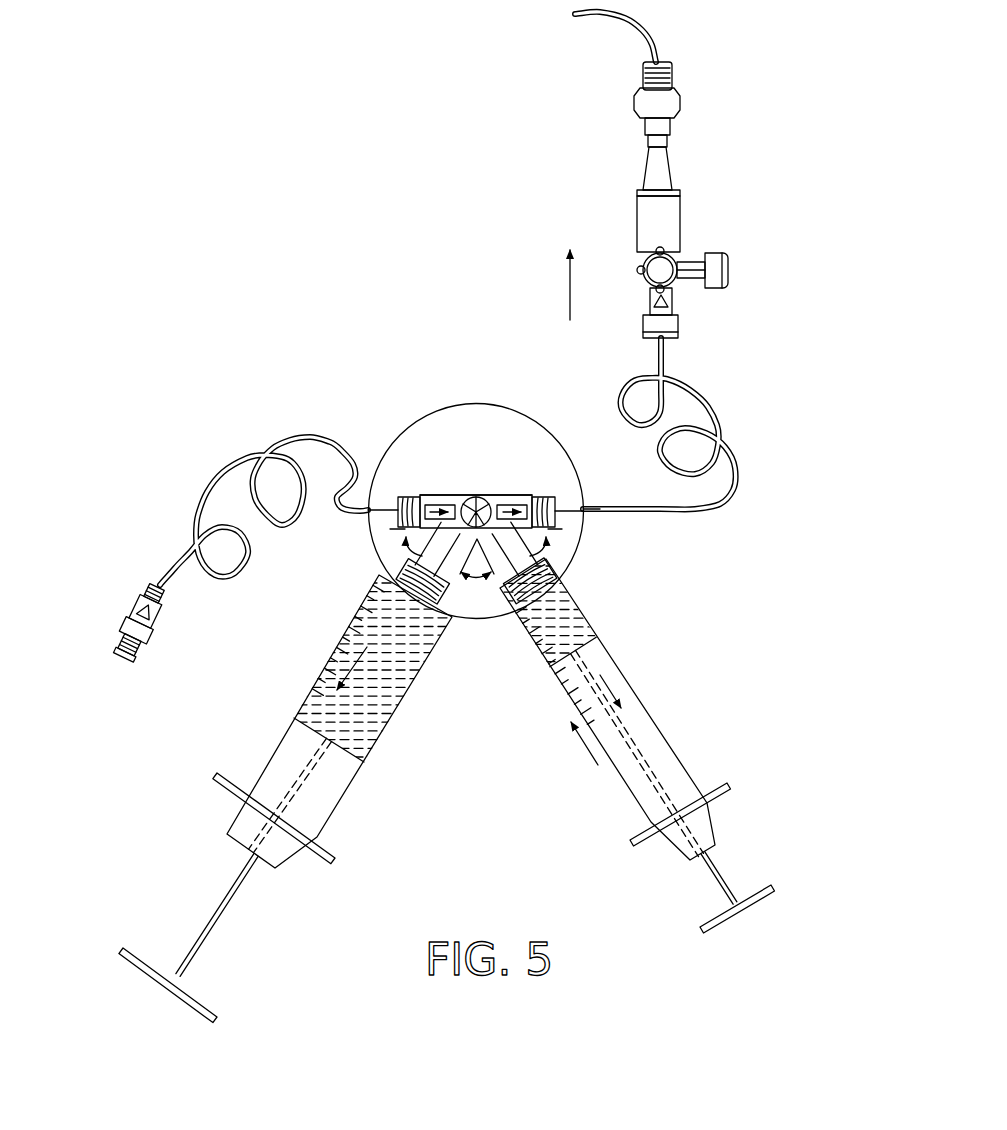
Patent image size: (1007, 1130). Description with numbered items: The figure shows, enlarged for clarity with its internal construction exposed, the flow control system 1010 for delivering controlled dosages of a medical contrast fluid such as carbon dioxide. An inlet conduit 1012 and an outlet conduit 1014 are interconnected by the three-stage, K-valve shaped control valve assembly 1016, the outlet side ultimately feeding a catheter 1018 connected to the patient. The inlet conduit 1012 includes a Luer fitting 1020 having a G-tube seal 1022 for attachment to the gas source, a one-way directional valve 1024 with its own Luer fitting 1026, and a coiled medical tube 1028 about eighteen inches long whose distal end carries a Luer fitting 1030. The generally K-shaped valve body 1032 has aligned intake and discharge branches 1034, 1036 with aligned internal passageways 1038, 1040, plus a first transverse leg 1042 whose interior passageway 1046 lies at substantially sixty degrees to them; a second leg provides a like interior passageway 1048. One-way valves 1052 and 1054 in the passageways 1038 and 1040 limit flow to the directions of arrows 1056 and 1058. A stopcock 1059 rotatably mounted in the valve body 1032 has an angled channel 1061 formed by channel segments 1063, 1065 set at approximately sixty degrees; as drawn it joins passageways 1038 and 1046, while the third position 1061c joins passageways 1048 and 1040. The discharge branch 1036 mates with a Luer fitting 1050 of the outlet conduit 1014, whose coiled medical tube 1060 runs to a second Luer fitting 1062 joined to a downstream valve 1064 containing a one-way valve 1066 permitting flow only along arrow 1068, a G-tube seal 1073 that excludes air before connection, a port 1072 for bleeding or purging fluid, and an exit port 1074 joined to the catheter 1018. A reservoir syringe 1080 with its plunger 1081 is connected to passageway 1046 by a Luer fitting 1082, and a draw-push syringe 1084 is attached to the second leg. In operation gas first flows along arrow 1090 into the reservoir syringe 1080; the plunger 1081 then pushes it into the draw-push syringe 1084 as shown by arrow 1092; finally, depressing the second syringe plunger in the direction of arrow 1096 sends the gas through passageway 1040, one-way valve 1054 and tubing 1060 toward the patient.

The flow control system 1010 is at (265, 442).
The inlet conduit 1012 is at (198, 467).
The outlet conduit 1014 is at (618, 382).
The control valve assembly 1016 is at (436, 497).
The catheter 1018 is at (620, 101).
The Luer fitting 1020 is at (118, 634).
The G-tube seal 1022 is at (130, 655).
The one-way directional valve 1024 is at (120, 590).
The Luer fitting 1026 is at (152, 585).
The coiled medical tube 1028 is at (318, 437).
The Luer fitting 1030 is at (372, 500).
The valve body 1032 is at (517, 497).
The intake branch 1034 is at (444, 497).
The discharge branch 1036 is at (547, 497).
The internal passageway 1038 is at (418, 497).
The internal passageway 1040 is at (501, 497).
The first transverse leg 1042 is at (493, 576).
The interior passageway 1046 is at (410, 562).
The interior passageway 1048 is at (548, 571).
The Luer fitting 1050 is at (560, 509).
The one-way valve 1052 is at (406, 497).
The one-way valve 1054 is at (553, 500).
The arrow 1056 is at (427, 497).
The arrow 1058 is at (533, 497).
The stopcock 1059 is at (478, 497).
The coiled medical tube 1060 is at (730, 520).
The angled channel 1061 is at (448, 486).
The stopcock channel position 1061c is at (490, 497).
The second Luer fitting 1062 is at (645, 328).
The channel segment 1063 is at (457, 497).
The downstream valve 1064 is at (707, 264).
The channel segment 1065 is at (405, 540).
The one-way valve 1066 is at (672, 302).
The arrow 1068 is at (570, 320).
The port 1072 is at (732, 265).
The G-tube seal 1073 is at (700, 280).
The exit port 1074 is at (682, 200).
The reservoir syringe 1080 is at (347, 721).
The plunger 1081 is at (220, 913).
The Luer fitting 1082 is at (400, 563).
The draw-push syringe 1084 is at (632, 746).
The arrow 1090 is at (442, 576).
The arrow 1092 is at (624, 678).
The arrow 1096 is at (596, 768).